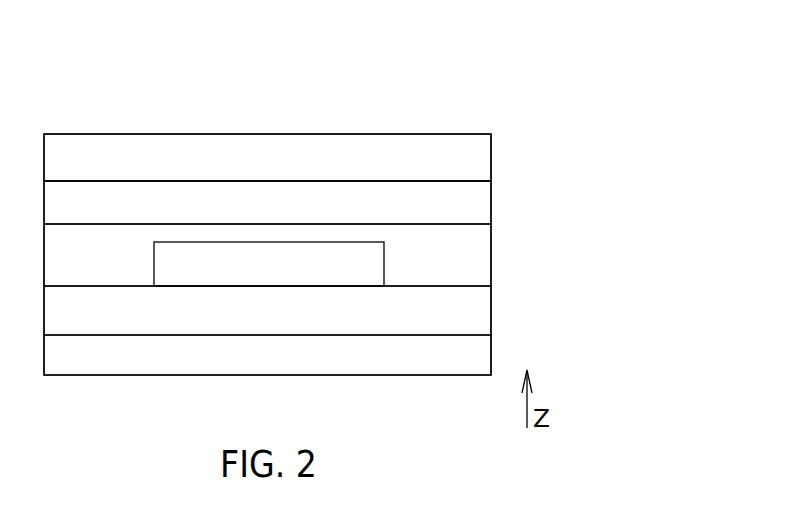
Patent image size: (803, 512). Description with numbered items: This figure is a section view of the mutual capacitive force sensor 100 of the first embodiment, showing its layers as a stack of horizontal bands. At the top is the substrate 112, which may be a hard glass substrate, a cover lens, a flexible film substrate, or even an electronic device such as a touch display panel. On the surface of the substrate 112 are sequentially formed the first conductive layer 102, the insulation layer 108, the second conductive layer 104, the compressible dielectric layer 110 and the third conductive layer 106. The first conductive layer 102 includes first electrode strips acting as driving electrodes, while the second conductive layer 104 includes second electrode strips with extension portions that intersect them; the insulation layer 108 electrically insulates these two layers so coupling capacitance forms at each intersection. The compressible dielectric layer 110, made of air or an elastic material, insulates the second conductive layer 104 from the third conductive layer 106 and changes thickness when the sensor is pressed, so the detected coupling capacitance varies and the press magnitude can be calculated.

The mutual capacitive force sensor 100 is at (463, 105).
The substrate 112 is at (286, 169).
The first conductive layer 102 is at (321, 213).
The insulation layer 108 is at (464, 266).
The second conductive layer 104 is at (311, 273).
The compressible dielectric layer 110 is at (286, 321).
The third conductive layer 106 is at (286, 366).